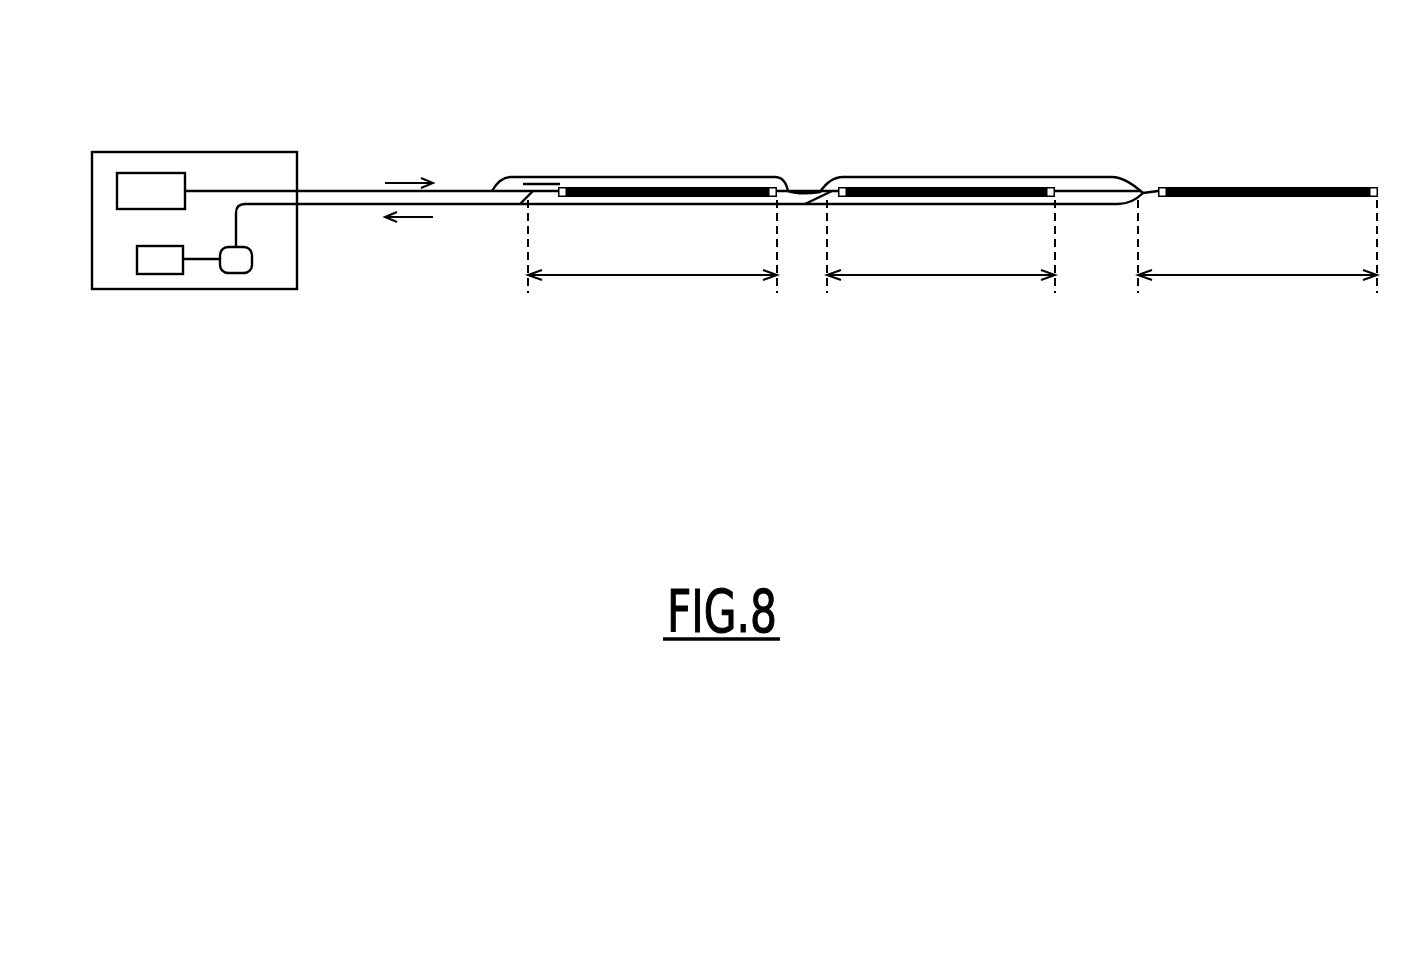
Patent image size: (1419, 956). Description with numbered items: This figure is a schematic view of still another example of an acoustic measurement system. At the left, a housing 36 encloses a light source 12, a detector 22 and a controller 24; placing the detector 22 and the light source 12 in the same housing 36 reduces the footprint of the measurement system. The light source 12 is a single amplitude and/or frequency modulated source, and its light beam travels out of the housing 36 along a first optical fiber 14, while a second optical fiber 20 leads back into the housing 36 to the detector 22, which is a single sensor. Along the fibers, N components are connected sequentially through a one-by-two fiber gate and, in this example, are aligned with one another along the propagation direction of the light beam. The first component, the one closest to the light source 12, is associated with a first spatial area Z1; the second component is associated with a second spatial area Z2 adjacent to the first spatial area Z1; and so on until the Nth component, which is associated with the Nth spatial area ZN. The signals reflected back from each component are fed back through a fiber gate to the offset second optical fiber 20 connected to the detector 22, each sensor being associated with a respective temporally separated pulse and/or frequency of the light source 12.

The light source 12 is at (160, 187).
The first optical fiber 14 is at (357, 163).
The second optical fiber 20 is at (353, 228).
The detector 22 is at (236, 265).
The controller 24 is at (153, 268).
The housing 36 is at (272, 170).
The first spatial area Z1 is at (650, 278).
The second spatial area Z2 is at (942, 278).
The Nth spatial area ZN is at (1223, 278).